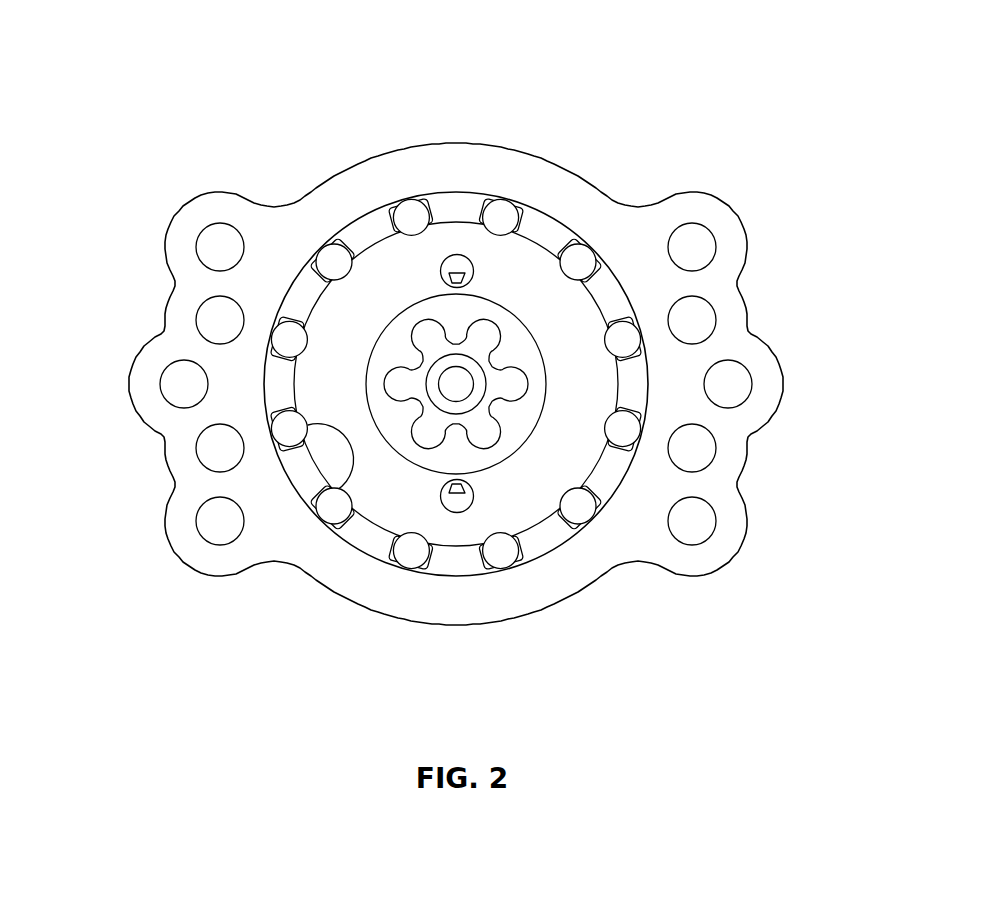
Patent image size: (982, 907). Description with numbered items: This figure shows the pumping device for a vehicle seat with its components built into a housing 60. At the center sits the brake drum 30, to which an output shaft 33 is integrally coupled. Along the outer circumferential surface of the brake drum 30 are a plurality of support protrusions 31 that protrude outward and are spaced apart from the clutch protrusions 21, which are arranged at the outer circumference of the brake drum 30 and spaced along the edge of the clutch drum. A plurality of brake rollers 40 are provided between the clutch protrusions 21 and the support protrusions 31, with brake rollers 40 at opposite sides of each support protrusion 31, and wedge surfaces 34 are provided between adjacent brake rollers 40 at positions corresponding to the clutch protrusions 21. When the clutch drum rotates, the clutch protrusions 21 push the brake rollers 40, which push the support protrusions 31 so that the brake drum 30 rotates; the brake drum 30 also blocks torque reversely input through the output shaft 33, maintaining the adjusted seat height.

The clutch protrusions 21 is at (458, 212).
The brake drum 30 is at (395, 498).
The support protrusions 31 is at (298, 388).
The output shaft 33 is at (470, 403).
The wedge surfaces 34 is at (607, 263).
The brake rollers 40 is at (408, 207).
The housing 60 is at (575, 202).